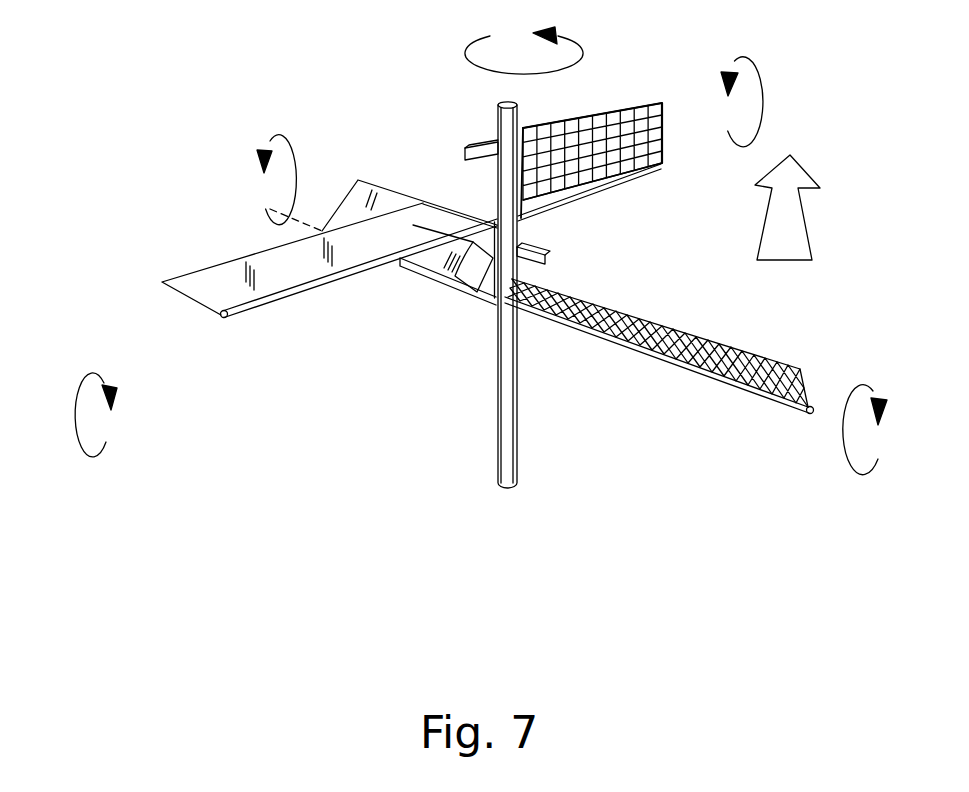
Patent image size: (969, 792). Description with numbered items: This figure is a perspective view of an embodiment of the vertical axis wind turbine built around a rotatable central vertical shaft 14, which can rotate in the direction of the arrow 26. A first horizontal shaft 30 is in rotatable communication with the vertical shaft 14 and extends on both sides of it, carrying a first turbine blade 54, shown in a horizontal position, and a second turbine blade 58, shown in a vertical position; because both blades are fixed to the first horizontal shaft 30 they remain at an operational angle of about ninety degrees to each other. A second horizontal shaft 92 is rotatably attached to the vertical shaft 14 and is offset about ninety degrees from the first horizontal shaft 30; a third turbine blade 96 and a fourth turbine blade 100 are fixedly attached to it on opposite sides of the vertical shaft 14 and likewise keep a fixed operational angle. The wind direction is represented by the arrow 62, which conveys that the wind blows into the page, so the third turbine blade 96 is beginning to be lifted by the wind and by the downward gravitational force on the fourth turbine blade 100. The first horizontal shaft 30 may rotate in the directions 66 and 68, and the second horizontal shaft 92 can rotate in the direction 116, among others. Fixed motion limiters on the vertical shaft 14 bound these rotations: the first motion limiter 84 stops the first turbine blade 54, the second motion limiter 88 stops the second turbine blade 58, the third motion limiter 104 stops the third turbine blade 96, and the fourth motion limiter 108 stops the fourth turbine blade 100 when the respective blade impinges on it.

The vertical shaft 14 is at (505, 433).
The arrow 26 is at (470, 44).
The first horizontal shaft 30 is at (645, 176).
The first turbine blade 54 is at (183, 292).
The second turbine blade 58 is at (660, 104).
The arrow 62 is at (793, 232).
The direction 66 is at (77, 427).
The direction 68 is at (768, 87).
The first motion limiter 84 is at (480, 146).
The second motion limiter 88 is at (522, 128).
The second horizontal shaft 92 is at (407, 264).
The third turbine blade 96 is at (722, 346).
The fourth turbine blade 100 is at (358, 180).
The third motion limiter 104 is at (546, 264).
The fourth motion limiter 108 is at (457, 253).
The direction 116 is at (262, 206).